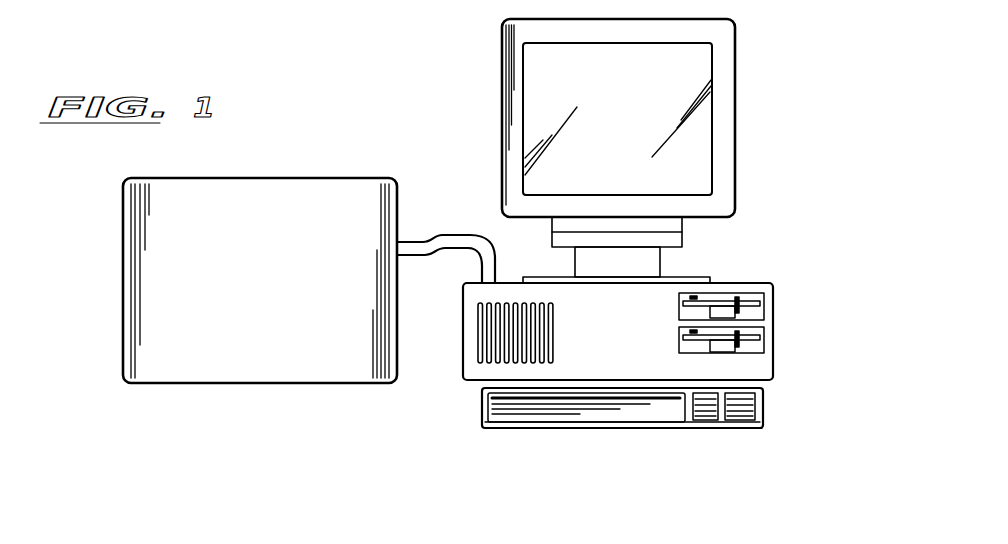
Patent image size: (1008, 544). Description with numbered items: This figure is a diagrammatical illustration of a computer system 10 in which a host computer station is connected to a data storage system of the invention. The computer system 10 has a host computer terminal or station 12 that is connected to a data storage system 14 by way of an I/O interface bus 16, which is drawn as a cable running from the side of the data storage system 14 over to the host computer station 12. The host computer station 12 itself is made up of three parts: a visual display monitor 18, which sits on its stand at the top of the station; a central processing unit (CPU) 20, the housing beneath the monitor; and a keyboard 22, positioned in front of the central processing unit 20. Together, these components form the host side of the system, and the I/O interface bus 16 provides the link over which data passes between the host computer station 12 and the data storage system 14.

The computer system 10 is at (380, 93).
The host computer terminal or station 12 is at (777, 232).
The data storage system 14 is at (310, 385).
The I/O interface bus 16 is at (453, 238).
The visual display monitor 18 is at (736, 72).
The central processing unit (CPU) 20 is at (775, 337).
The keyboard 22 is at (763, 404).